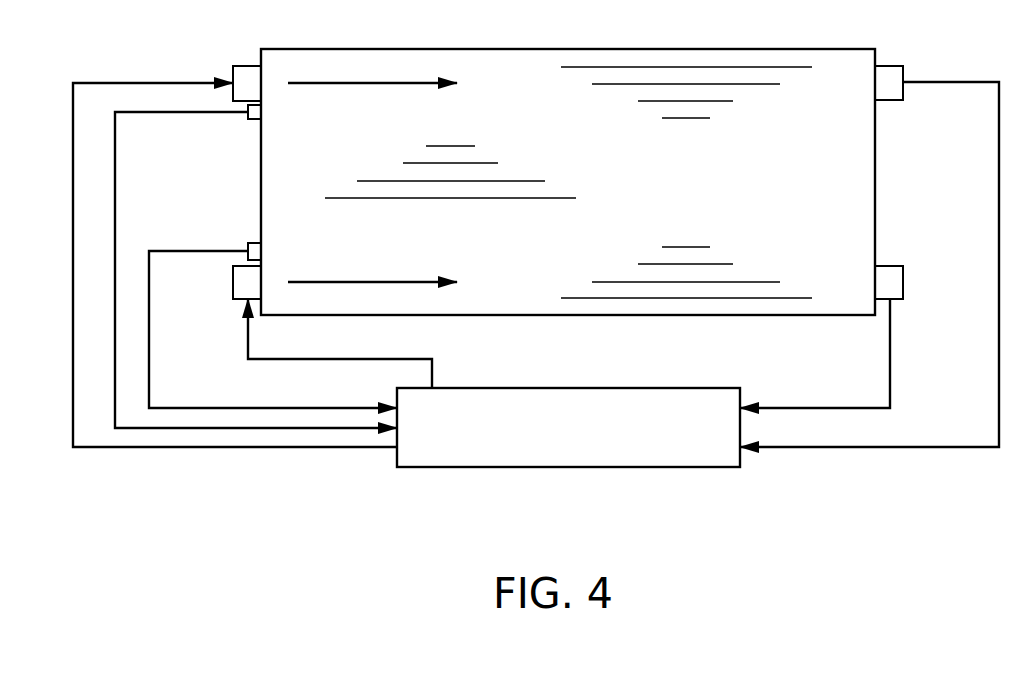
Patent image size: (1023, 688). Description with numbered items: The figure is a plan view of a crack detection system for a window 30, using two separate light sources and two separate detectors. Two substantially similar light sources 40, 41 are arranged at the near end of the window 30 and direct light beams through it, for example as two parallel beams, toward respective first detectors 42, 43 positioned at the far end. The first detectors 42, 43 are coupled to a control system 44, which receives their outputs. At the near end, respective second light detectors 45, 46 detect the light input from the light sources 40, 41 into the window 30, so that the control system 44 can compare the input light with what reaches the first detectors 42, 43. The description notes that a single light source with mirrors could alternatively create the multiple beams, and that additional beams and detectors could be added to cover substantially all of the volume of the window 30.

The window 30 is at (568, 182).
The light source 40 is at (233, 66).
The light source 41 is at (233, 299).
The first detector 42 is at (903, 66).
The first detector 43 is at (903, 300).
The control system 44 is at (697, 468).
The second light detector 45 is at (248, 119).
The second light detector 46 is at (248, 243).